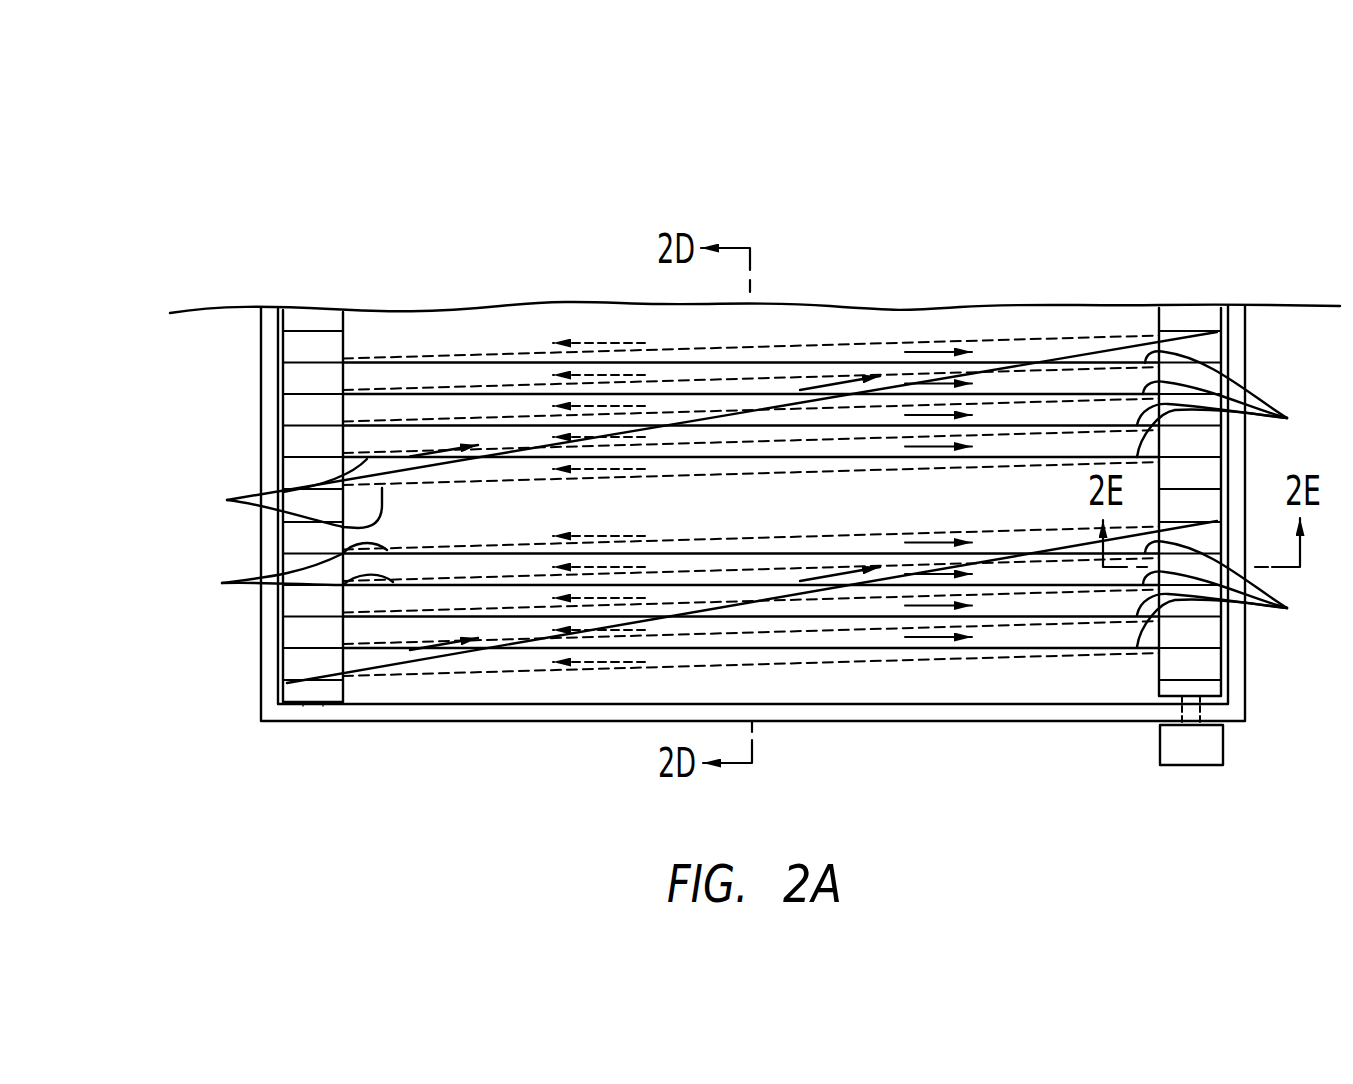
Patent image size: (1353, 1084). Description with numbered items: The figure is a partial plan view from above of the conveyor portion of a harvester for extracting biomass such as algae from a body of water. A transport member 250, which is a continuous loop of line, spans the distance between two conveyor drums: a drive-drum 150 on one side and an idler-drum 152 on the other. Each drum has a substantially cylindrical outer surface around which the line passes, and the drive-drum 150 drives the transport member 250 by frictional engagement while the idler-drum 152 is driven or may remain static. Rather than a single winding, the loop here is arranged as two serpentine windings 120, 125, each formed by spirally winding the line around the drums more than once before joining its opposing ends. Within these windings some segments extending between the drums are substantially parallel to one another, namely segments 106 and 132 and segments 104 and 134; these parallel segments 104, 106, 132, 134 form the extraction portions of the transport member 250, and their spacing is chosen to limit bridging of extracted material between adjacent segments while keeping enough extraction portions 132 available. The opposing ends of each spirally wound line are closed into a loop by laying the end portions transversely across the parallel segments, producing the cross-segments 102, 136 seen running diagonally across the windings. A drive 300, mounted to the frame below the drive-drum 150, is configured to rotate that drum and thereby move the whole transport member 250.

The transport member 250 is at (1188, 210).
The drive-drum 150 is at (1188, 317).
The idler-drum 152 is at (313, 316).
The serpentine winding 120 is at (172, 333).
The serpentine winding 125 is at (172, 525).
The cross-segment 102 is at (1133, 332).
The parallel segment 104 is at (378, 195).
The parallel segment 106 is at (1238, 404).
The parallel segment 134 is at (480, 773).
The cross-segment 136 is at (1062, 548).
The parallel segment 132 is at (1238, 594).
The drive 300 is at (1223, 743).